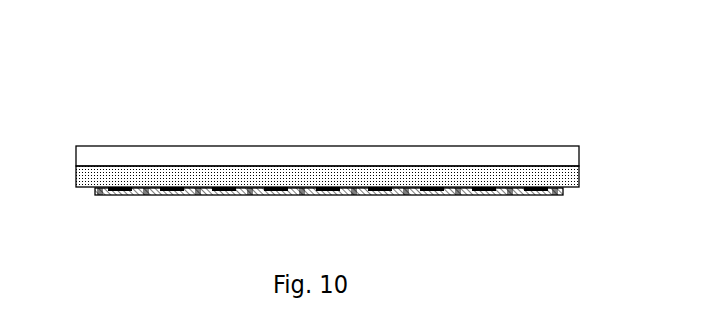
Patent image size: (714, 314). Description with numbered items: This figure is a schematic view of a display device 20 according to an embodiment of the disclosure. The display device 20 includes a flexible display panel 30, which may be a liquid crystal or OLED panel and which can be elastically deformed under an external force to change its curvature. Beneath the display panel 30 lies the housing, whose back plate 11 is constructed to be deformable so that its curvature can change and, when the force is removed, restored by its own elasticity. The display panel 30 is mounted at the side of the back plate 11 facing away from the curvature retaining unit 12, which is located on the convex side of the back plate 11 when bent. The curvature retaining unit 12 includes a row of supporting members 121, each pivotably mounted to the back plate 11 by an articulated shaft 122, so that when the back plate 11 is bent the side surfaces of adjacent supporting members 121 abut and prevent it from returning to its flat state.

The display device 20 is at (118, 100).
The flexible display panel 30 is at (573, 156).
The back plate 11 is at (70, 168).
The curvature retaining unit 12 is at (328, 212).
The supporting member 121 is at (552, 195).
The articulated shaft 122 is at (432, 197).